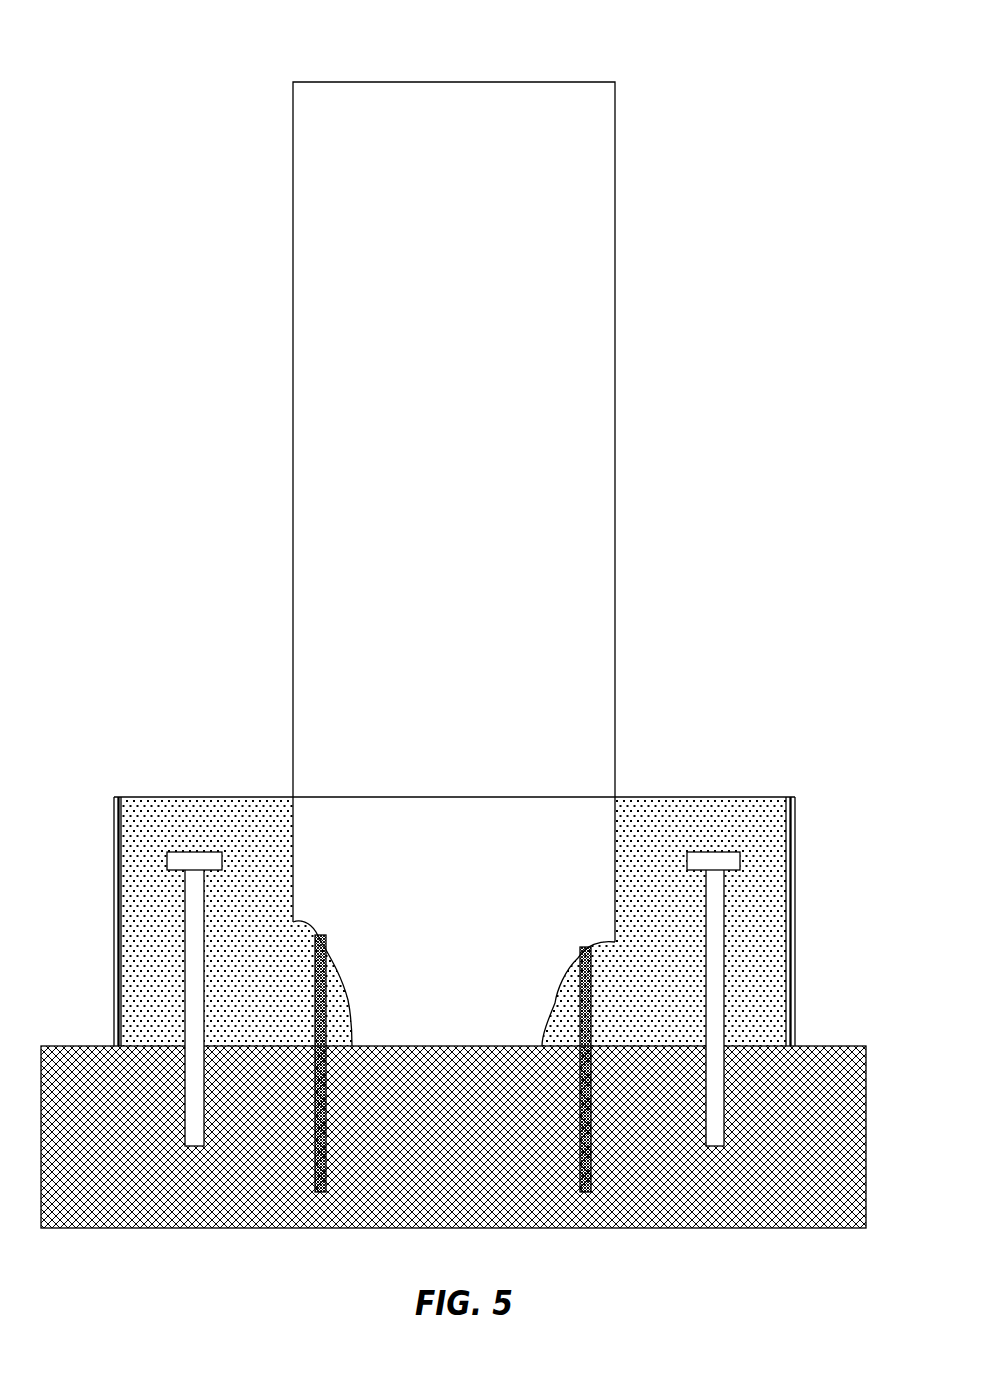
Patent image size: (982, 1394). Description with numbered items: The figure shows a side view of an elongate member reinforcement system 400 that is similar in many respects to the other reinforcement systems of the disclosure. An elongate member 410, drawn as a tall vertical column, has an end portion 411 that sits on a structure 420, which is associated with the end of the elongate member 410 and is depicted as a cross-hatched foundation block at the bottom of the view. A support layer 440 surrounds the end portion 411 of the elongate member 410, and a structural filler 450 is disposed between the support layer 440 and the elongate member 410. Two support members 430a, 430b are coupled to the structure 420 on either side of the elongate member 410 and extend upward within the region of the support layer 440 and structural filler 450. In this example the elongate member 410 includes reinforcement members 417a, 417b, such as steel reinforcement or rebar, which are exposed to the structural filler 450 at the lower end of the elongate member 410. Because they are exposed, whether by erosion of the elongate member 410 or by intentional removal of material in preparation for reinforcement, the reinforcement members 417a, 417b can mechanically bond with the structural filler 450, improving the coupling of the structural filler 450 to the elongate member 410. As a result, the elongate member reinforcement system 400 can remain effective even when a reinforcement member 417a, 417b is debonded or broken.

The elongate member reinforcement system 400 is at (190, 42).
The elongate member 410 is at (292, 162).
The end portion 411 is at (274, 860).
The reinforcement member 417a is at (315, 980).
The reinforcement member 417b is at (591, 992).
The structure 420 is at (62, 1045).
The support member 430a is at (185, 905).
The support member 430b is at (724, 902).
The support layer 440 is at (114, 852).
The structural filler 450 is at (285, 1025).